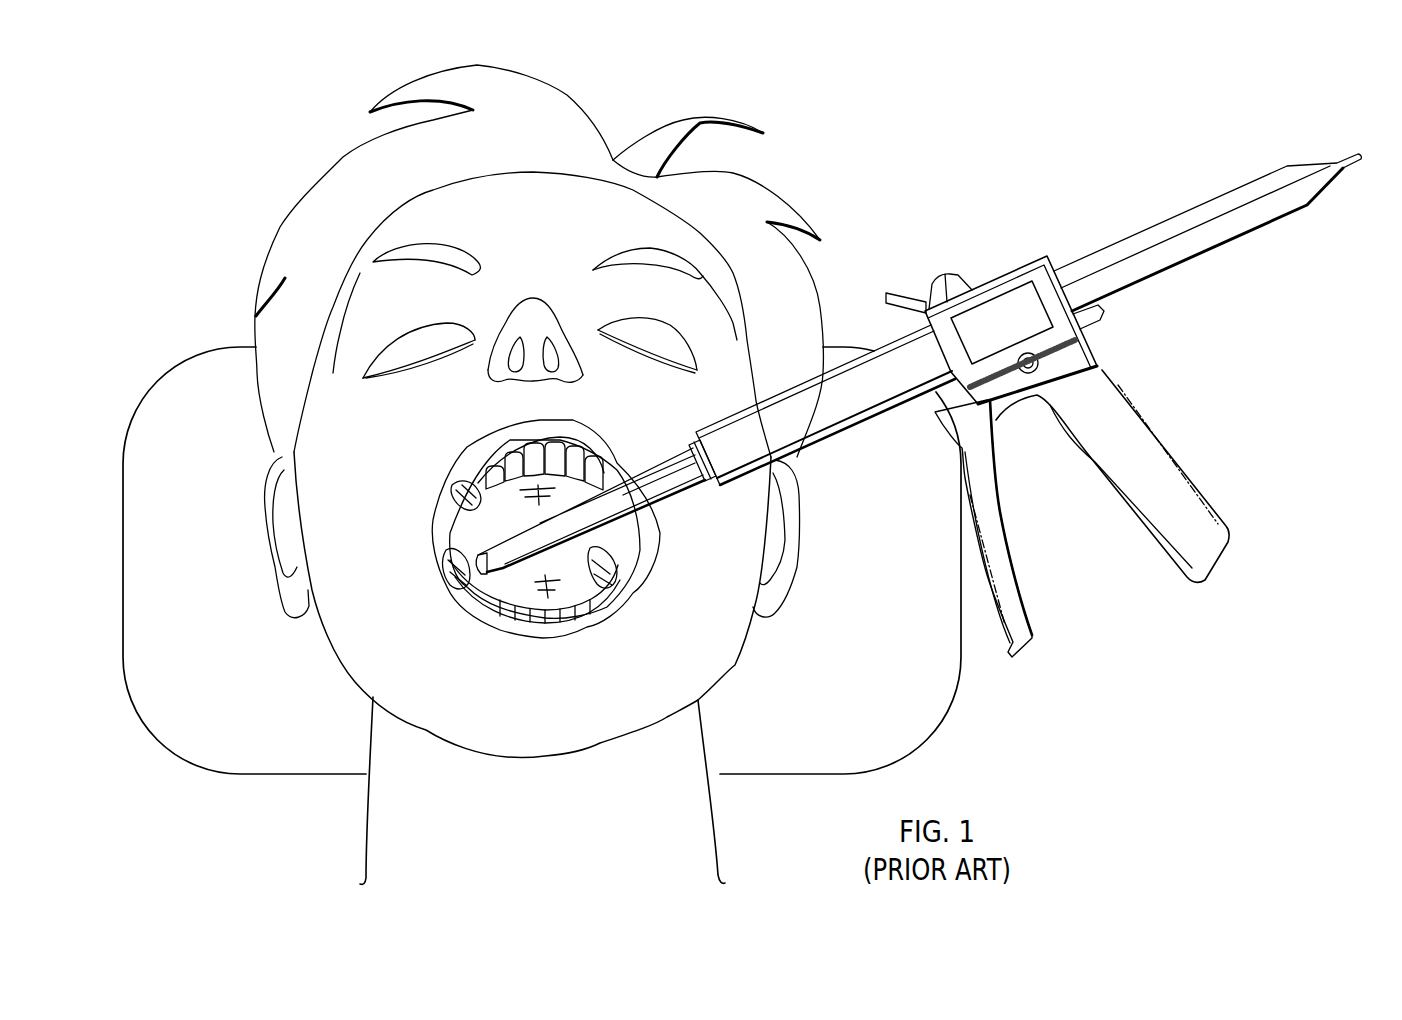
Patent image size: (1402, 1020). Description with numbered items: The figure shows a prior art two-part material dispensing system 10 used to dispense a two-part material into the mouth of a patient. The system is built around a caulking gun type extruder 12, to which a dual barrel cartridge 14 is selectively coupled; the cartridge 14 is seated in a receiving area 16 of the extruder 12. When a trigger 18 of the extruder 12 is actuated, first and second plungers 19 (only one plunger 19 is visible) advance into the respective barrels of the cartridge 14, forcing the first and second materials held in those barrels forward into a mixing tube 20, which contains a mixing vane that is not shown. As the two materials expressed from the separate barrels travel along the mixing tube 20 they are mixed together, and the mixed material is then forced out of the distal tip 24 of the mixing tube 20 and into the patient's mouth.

The two-part material dispensing system 10 is at (886, 407).
The caulking gun type extruder 12 is at (924, 270).
The dual barrel cartridge 14 is at (848, 450).
The receiving area 16 is at (896, 322).
The trigger 18 is at (1003, 508).
The plunger 19 is at (1273, 152).
The mixing tube 20 is at (558, 577).
The distal tip 24 is at (477, 576).